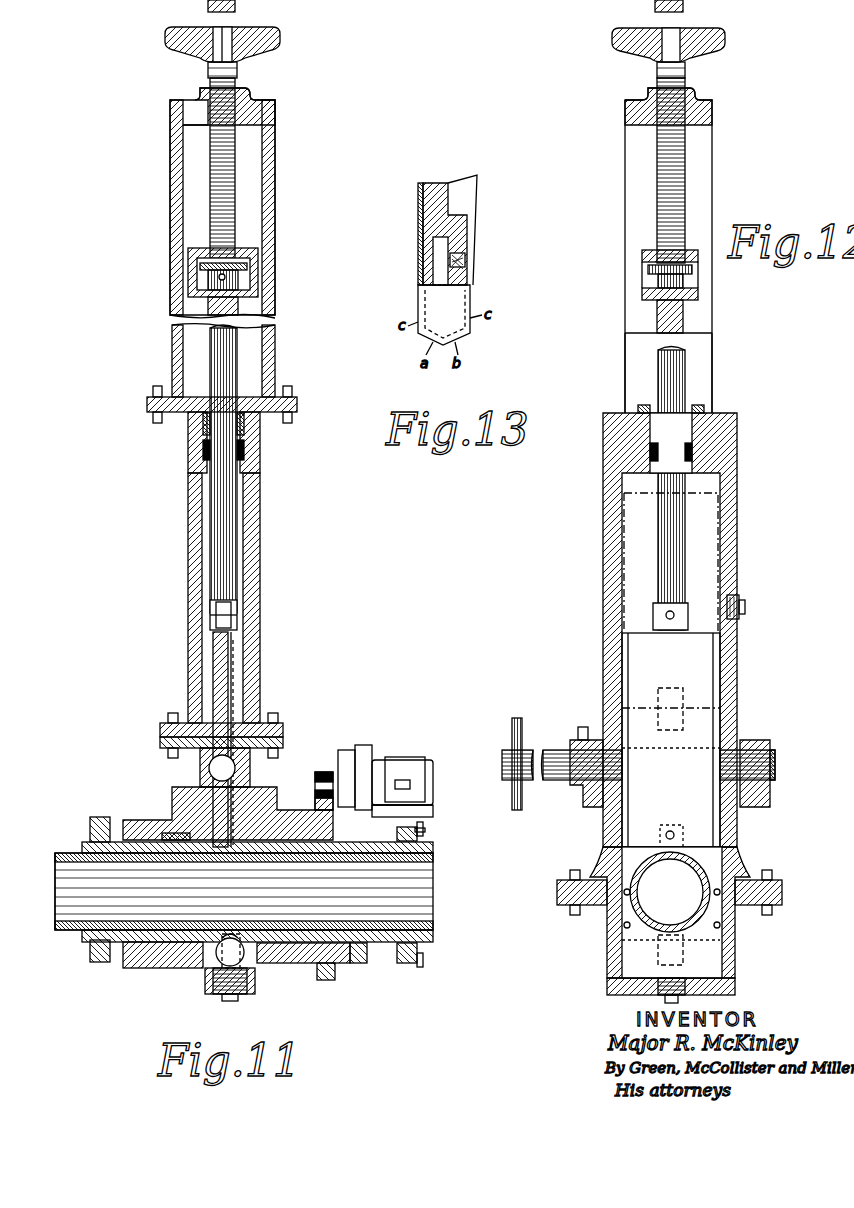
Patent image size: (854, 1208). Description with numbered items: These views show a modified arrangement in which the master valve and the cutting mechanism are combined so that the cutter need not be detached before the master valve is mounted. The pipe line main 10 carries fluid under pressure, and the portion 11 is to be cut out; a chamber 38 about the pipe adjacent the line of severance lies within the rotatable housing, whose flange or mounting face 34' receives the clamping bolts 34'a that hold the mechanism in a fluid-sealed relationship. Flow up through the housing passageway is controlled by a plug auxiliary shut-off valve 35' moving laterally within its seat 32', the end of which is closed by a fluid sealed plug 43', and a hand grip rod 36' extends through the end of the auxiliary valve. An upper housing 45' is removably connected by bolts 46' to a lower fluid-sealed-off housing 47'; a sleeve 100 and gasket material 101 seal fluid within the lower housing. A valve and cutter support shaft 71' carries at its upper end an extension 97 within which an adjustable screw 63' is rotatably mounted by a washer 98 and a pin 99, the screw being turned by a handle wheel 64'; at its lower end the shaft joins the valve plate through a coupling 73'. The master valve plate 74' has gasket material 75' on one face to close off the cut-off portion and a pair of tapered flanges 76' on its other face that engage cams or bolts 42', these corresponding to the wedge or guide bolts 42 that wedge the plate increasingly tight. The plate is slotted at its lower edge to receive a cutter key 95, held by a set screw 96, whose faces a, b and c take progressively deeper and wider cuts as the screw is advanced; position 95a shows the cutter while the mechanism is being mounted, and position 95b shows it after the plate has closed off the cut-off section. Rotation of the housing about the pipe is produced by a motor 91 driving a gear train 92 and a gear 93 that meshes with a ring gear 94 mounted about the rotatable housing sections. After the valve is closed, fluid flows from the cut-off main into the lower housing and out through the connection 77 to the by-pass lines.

In FIG. 11, the pipe line main 10 is at (433, 868).
In FIG. 11, the portion of pipe line 11 is at (48, 845).
In FIG. 12, the seat portion 32' is at (770, 777).
In FIG. 11, the flange or mounting face 34' is at (191, 729).
In FIG. 11, the clamping bolts 34'a is at (186, 720).
In FIG. 12, the plug auxiliary shut-off valve 35' is at (576, 790).
In FIG. 12, the hand grip rod 36' is at (513, 750).
In FIG. 11, the chamber 38 is at (206, 975).
In FIG. 12, the wedge or guide bolts 42 is at (664, 932).
In FIG. 11, the cams or bolts 42' is at (266, 910).
In FIG. 12, the fluid sealed plug 43' is at (695, 767).
In FIG. 11, the upper housing 45' is at (249, 360).
In FIG. 12, the upper housing 45' is at (692, 351).
In FIG. 11, the bolts 46' is at (237, 394).
In FIG. 11, the lower fluid-sealed-off housing 47' is at (251, 567).
In FIG. 12, the lower fluid-sealed-off housing 47' is at (643, 630).
In FIG. 11, the adjustable screw 63' is at (266, 171).
In FIG. 12, the adjustable screw 63' is at (620, 170).
In FIG. 11, the handle wheel 64' is at (243, 52).
In FIG. 12, the handle wheel 64' is at (640, 53).
In FIG. 11, the valve and cutter support shaft 71' is at (261, 469).
In FIG. 12, the valve and cutter support shaft 71' is at (724, 489).
In FIG. 11, the stem coupling 73' is at (191, 615).
In FIG. 12, the stem coupling 73' is at (619, 615).
In FIG. 11, the master valve plate 74' is at (262, 739).
In FIG. 13, the master valve plate 74' is at (470, 234).
In FIG. 12, the master valve plate 74' is at (635, 738).
In FIG. 11, the gasket material 75' is at (190, 775).
In FIG. 13, the gasket material 75' is at (399, 234).
In FIG. 13, the tapered flanges 76' is at (484, 230).
In FIG. 12, the tapered flanges 76' is at (751, 740).
In FIG. 12, the connection 77 is at (746, 600).
In FIG. 11, the motor 91 is at (430, 760).
In FIG. 11, the gear train 92 is at (363, 750).
In FIG. 11, the gear 93 is at (322, 773).
In FIG. 11, the ring gear 94 is at (334, 980).
In FIG. 11, the cutter key 95 is at (244, 965).
In FIG. 13, the cutter key 95 is at (425, 308).
In FIG. 12, the cutter key 95 is at (688, 850).
In FIG. 12, the cutter mounting position 95a is at (685, 722).
In FIG. 11, the cutter closed position 95b is at (212, 988).
In FIG. 12, the cutter closed position 95b is at (685, 956).
In FIG. 13, the set screw 96 is at (464, 260).
In FIG. 12, the set screw 96 is at (666, 837).
In FIG. 11, the extension 97 is at (258, 252).
In FIG. 12, the extension 97 is at (642, 257).
In FIG. 11, the washer 98 is at (247, 266).
In FIG. 12, the washer 98 is at (648, 270).
In FIG. 11, the pin 99 is at (232, 280).
In FIG. 12, the pin 99 is at (655, 282).
In FIG. 11, the sleeve 100 is at (244, 425).
In FIG. 12, the sleeve 100 is at (645, 404).
In FIG. 11, the gasket material 101 is at (244, 452).
In FIG. 12, the gasket material 101 is at (652, 455).